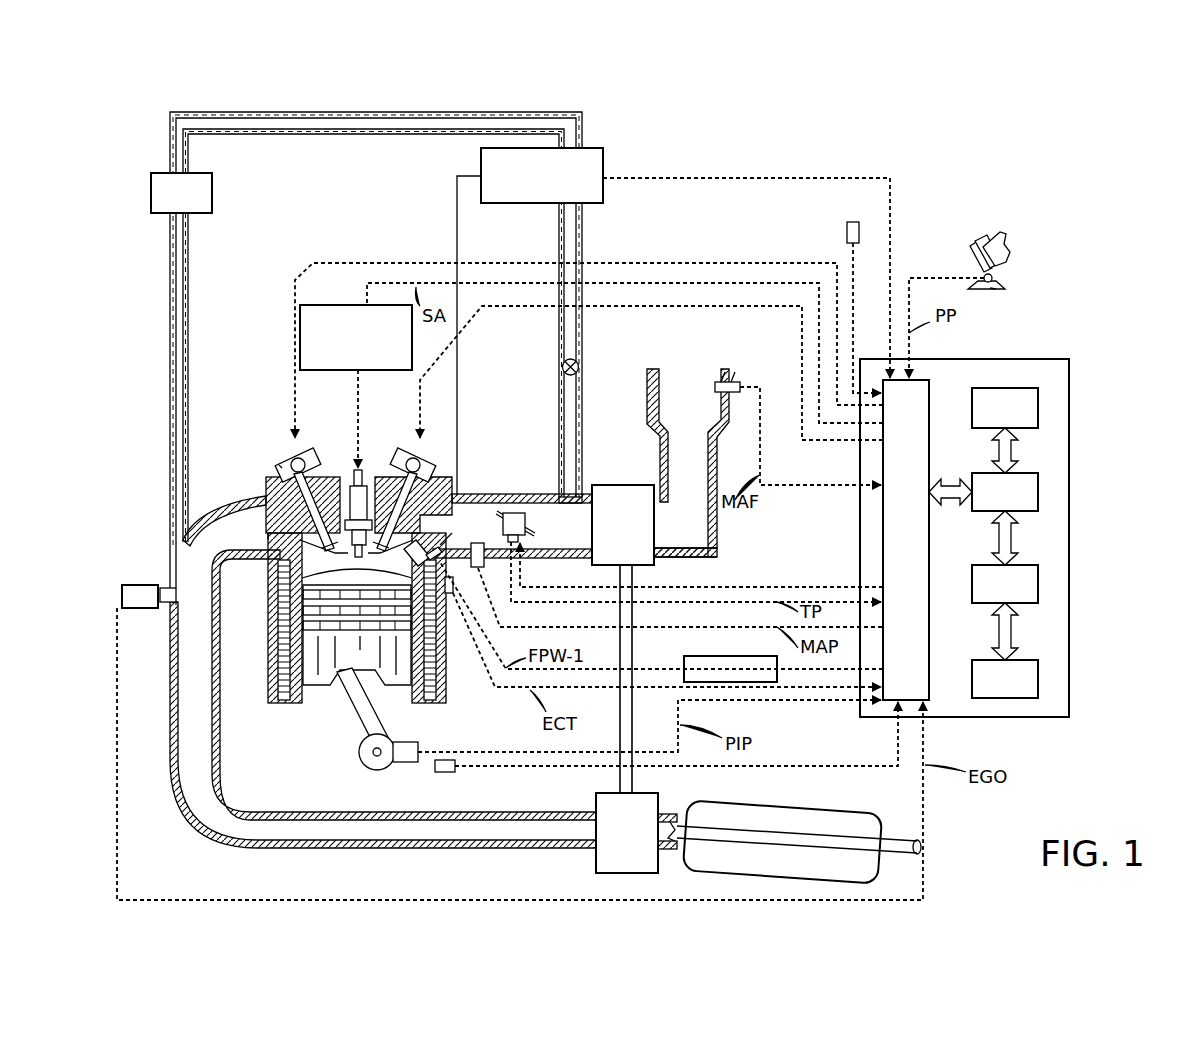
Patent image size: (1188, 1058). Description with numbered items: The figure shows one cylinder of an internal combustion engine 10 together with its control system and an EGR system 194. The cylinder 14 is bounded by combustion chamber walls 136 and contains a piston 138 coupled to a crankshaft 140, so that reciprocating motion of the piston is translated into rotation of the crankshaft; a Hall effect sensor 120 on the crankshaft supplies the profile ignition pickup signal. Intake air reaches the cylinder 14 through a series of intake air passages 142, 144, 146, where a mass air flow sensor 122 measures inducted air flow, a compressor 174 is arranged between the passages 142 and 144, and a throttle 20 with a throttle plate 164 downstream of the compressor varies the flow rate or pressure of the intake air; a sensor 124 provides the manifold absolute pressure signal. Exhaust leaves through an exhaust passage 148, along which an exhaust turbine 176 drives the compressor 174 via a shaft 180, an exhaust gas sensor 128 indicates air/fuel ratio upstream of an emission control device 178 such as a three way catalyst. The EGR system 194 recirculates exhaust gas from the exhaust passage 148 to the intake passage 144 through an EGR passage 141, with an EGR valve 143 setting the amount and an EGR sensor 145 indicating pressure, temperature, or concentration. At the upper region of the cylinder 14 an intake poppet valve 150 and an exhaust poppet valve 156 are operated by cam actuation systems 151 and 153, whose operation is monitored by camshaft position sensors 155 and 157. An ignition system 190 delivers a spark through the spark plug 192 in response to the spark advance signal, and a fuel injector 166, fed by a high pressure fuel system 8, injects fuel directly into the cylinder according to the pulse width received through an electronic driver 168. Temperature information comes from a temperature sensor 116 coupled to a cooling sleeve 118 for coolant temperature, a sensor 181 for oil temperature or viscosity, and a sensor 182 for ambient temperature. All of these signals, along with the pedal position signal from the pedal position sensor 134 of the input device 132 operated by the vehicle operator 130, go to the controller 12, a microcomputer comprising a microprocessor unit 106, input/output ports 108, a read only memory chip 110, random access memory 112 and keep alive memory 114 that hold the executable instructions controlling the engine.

The internal combustion engine 10 is at (110, 203).
The EGR system 194 is at (645, 146).
The EGR sensor 145 is at (212, 193).
The EGR passage 141 is at (582, 232).
The high pressure fuel system 8 is at (542, 175).
The EGR valve 143 is at (578, 361).
The intake air passage 142 is at (688, 463).
The mass air flow sensor 122 is at (737, 378).
The compressor 174 is at (614, 485).
The shaft 180 is at (632, 760).
The intake air passage 144 is at (512, 526).
The intake air passage 146 is at (466, 529).
The throttle plate 164 is at (497, 509).
The throttle 20 is at (517, 511).
The manifold absolute pressure sensor 124 is at (478, 567).
The exhaust passage 148 is at (383, 672).
The exhaust gas sensor 128 is at (122, 590).
The combustion chamber walls 136 is at (300, 700).
The cooling sleeve 118 is at (432, 657).
The temperature sensor 116 is at (450, 593).
The piston 138 is at (340, 655).
The crankshaft 140 is at (365, 768).
The Hall effect sensor 120 is at (408, 762).
The sensor 181 is at (445, 772).
The cylinder 14 is at (273, 582).
The cam actuation system 153 is at (307, 453).
The camshaft position sensor 157 is at (282, 467).
The cam actuation system 151 is at (408, 453).
The exhaust poppet valve 156 is at (320, 522).
The camshaft position sensor 155 is at (427, 470).
The intake poppet valve 150 is at (387, 510).
The spark plug 192 is at (352, 503).
The fuel injector 166 is at (421, 547).
The controller 12 is at (1060, 359).
The input/output ports 108 is at (929, 388).
The read only memory chip 110 is at (1038, 405).
The microprocessor unit 106 is at (1038, 490).
The random access memory 112 is at (1038, 583).
The keep alive memory 114 is at (1038, 677).
The vehicle operator 130 is at (1003, 236).
The input device 132 is at (976, 252).
The pedal position sensor 134 is at (1005, 285).
The sensor 182 is at (847, 228).
The ignition system 190 is at (312, 305).
The electronic driver 168 is at (686, 656).
The exhaust turbine 176 is at (596, 862).
The emission control device 178 is at (845, 810).